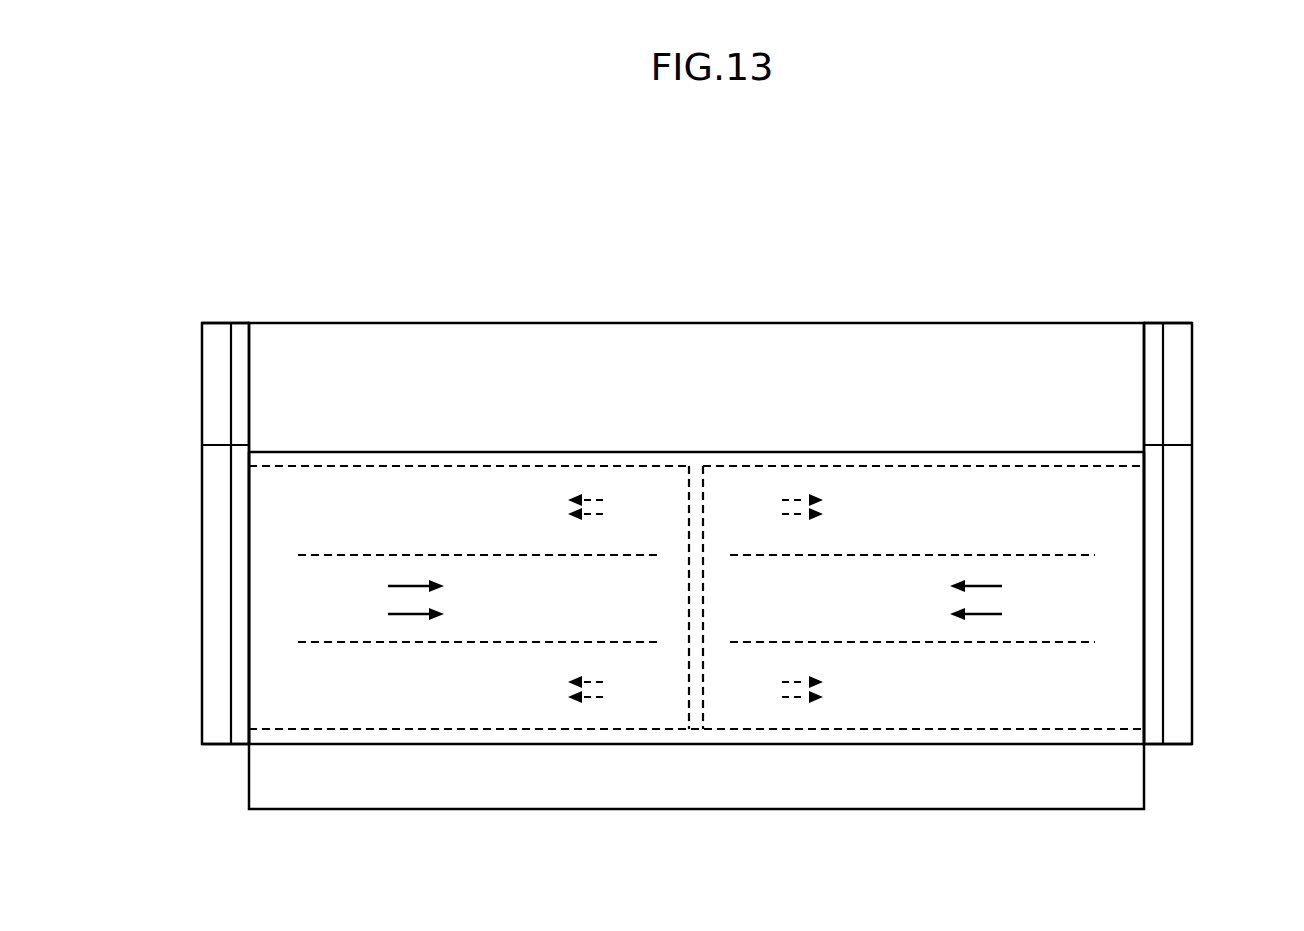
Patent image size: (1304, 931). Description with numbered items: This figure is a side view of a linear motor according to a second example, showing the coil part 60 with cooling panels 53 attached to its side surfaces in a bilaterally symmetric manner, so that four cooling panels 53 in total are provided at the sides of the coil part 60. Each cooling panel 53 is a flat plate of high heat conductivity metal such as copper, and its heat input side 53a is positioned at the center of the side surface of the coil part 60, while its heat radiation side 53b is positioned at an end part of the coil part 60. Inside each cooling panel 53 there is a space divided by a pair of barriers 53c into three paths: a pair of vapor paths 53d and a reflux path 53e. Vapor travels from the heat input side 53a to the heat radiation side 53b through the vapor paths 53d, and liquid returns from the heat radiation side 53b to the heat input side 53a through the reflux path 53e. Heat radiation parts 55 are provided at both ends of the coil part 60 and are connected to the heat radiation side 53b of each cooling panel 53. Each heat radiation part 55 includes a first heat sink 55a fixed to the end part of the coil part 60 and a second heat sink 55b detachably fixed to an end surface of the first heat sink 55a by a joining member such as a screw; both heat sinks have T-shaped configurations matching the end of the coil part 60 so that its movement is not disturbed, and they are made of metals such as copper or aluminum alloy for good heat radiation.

The coil part 60 is at (628, 356).
The heat radiation part 55 is at (198, 506).
The first heat sink 55a is at (246, 746).
The second heat sink 55b is at (203, 323).
The cooling panel 53 is at (551, 458).
The heat input side 53a is at (727, 478).
The heat radiation side 53b is at (272, 582).
The barrier 53c is at (421, 553).
The vapor path 53d is at (490, 483).
The reflux path 53e is at (553, 605).